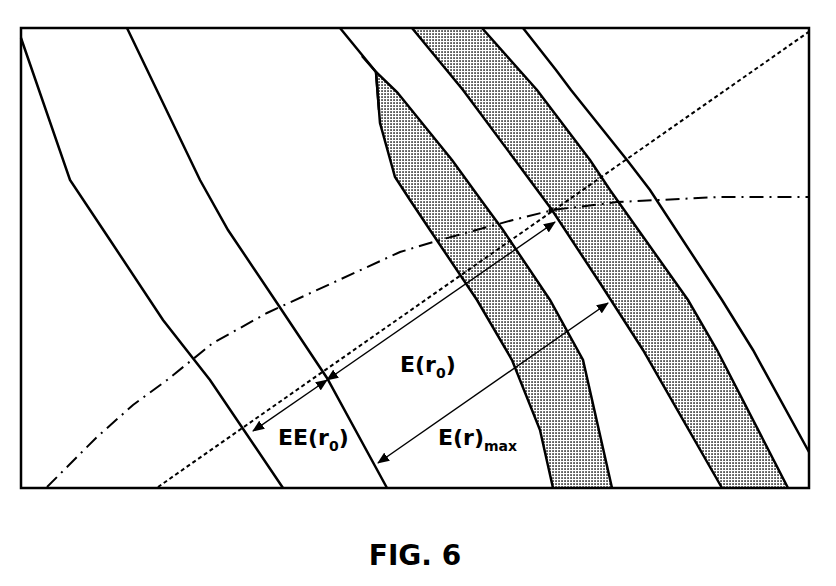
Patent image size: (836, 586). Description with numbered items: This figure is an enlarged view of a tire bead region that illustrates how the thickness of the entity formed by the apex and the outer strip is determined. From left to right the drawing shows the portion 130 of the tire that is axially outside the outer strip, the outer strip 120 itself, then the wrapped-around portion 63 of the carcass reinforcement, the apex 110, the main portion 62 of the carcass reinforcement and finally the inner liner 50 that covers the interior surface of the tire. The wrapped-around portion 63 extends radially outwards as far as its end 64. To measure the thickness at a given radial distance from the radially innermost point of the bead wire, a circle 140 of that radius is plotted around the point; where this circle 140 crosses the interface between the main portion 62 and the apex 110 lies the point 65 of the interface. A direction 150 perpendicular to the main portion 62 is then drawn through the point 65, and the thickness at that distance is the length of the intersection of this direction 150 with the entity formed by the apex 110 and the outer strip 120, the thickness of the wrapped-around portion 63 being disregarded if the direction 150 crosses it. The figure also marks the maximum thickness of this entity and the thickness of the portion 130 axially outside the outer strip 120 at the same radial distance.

The inner liner 50 is at (559, 75).
The main portion of the carcass reinforcement 62 is at (660, 333).
The wrapped-around portion of the carcass reinforcement 63 is at (566, 421).
The end of the wrapped-around portion 64 is at (370, 73).
The point of the interface 65 is at (546, 209).
The apex 110 is at (649, 436).
The outer strip 120 is at (257, 258).
The portion of the tire axially outside the outer strip 130 is at (152, 263).
The circle 140 is at (132, 406).
The direction perpendicular to the main portion 150 is at (713, 97).